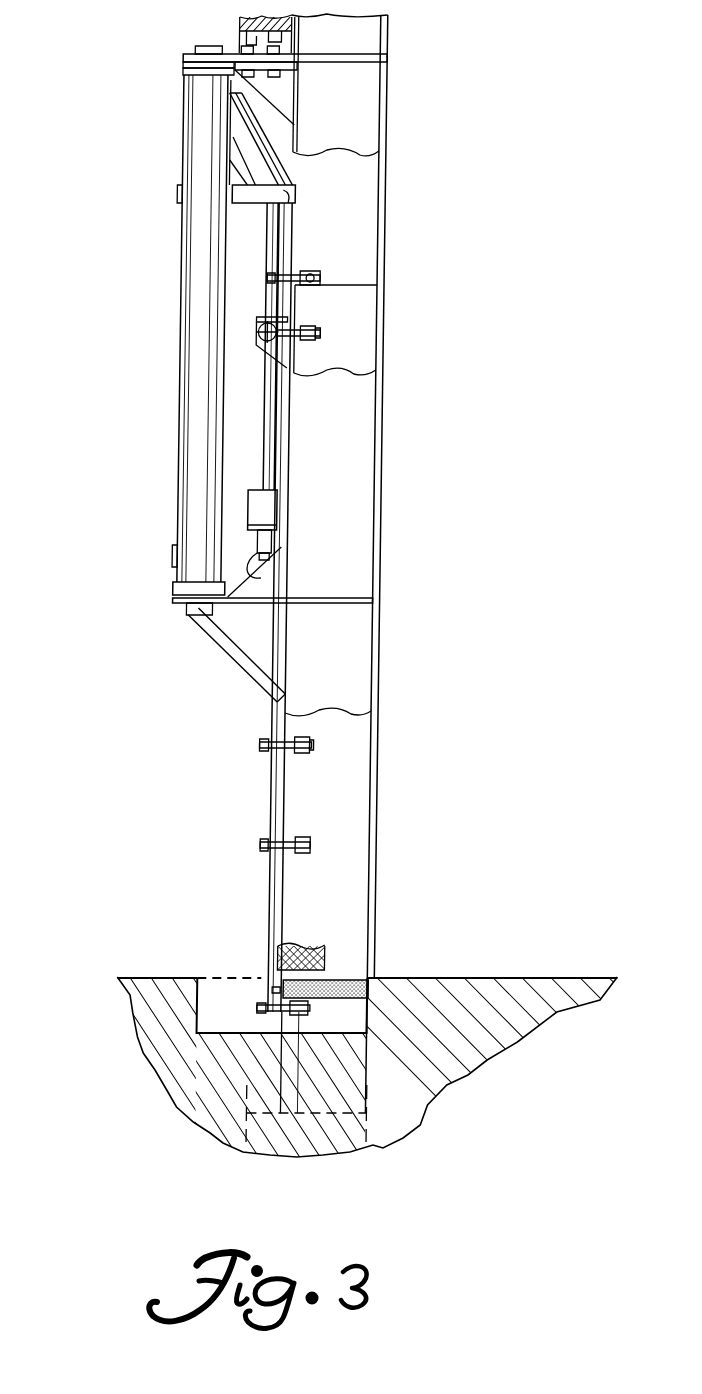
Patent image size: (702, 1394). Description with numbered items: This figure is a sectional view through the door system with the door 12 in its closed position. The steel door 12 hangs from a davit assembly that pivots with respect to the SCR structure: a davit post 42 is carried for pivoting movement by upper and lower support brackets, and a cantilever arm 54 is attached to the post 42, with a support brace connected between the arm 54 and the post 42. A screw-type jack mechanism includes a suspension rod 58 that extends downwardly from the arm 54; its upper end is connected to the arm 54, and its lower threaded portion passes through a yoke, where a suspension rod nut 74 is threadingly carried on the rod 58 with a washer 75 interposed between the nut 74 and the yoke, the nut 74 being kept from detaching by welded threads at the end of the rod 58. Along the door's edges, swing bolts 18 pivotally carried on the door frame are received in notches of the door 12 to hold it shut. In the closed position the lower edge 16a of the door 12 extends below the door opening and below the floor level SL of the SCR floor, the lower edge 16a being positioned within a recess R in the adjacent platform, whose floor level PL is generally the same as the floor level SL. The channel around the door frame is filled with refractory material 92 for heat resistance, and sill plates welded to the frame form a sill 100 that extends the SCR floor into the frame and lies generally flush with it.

The door 12 is at (275, 887).
The lower edge 16a is at (275, 992).
The swing bolt 18 is at (300, 757).
The davit post 42 is at (203, 248).
The cantilever arm 54 is at (279, 207).
The suspension rod 58 is at (267, 435).
The suspension rod nut 74 is at (262, 578).
The washer 75 is at (257, 537).
The refractory material 92 is at (372, 977).
The sill 100 is at (350, 975).
The floor level PL is at (144, 978).
The recess R is at (220, 992).
The floor level SL is at (510, 977).